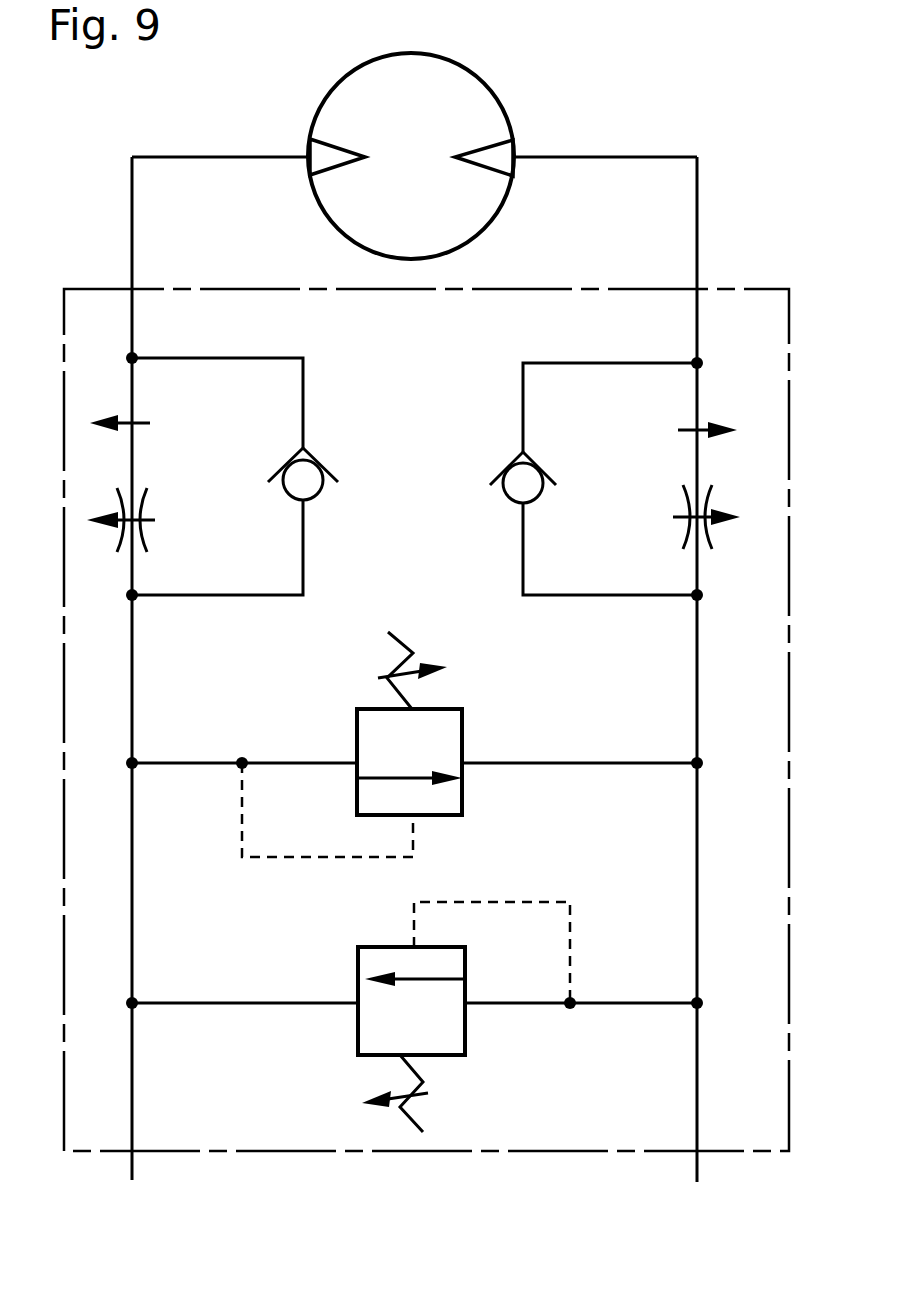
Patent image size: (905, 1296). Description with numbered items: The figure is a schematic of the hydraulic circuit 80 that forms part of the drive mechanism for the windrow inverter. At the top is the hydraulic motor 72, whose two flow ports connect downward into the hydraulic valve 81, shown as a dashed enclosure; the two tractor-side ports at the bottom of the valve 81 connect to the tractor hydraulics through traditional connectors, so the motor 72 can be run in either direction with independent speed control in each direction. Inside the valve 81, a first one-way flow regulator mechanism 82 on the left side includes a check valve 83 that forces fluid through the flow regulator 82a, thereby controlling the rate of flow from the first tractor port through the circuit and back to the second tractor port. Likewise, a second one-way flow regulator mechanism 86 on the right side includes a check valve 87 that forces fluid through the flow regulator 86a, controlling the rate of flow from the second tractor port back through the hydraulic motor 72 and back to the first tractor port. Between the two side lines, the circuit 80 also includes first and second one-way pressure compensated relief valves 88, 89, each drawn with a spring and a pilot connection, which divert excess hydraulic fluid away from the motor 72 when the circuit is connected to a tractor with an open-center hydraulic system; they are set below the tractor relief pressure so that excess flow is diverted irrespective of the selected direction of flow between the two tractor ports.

The hydraulic motor 72 is at (332, 90).
The hydraulic circuit 80 is at (616, 100).
The hydraulic valve 81 is at (782, 289).
The first one-way flow regulator mechanism 82 is at (250, 464).
The flow regulator 82a is at (143, 507).
The check valve 83 is at (318, 462).
The second one-way flow regulator mechanism 86 is at (606, 456).
The flow regulator 86a is at (688, 538).
The check valve 87 is at (541, 472).
The first one-way pressure compensated relief valve 88 is at (462, 730).
The second one-way pressure compensated relief valve 89 is at (365, 963).